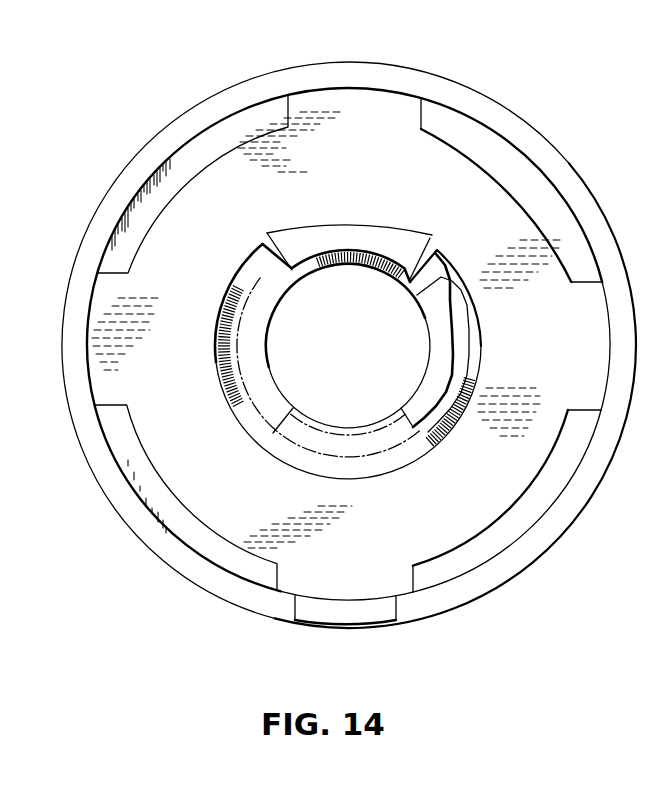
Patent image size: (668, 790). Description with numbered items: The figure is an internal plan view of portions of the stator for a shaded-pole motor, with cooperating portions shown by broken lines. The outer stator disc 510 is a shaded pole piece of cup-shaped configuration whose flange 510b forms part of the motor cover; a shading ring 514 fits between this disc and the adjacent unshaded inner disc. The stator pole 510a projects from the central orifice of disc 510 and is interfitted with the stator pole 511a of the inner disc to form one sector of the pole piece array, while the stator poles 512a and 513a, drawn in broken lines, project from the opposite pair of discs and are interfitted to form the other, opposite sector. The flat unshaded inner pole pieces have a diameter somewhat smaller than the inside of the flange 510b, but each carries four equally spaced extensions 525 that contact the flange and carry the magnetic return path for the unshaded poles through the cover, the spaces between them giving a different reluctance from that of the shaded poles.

The stator disc 510 is at (457, 348).
The stator pole 510a is at (443, 331).
The flange 510b is at (244, 86).
The stator pole 511a is at (367, 237).
The stator pole 512a is at (374, 457).
The stator pole 513a is at (238, 365).
The shading ring 514 is at (217, 557).
The extension 525 is at (410, 95).